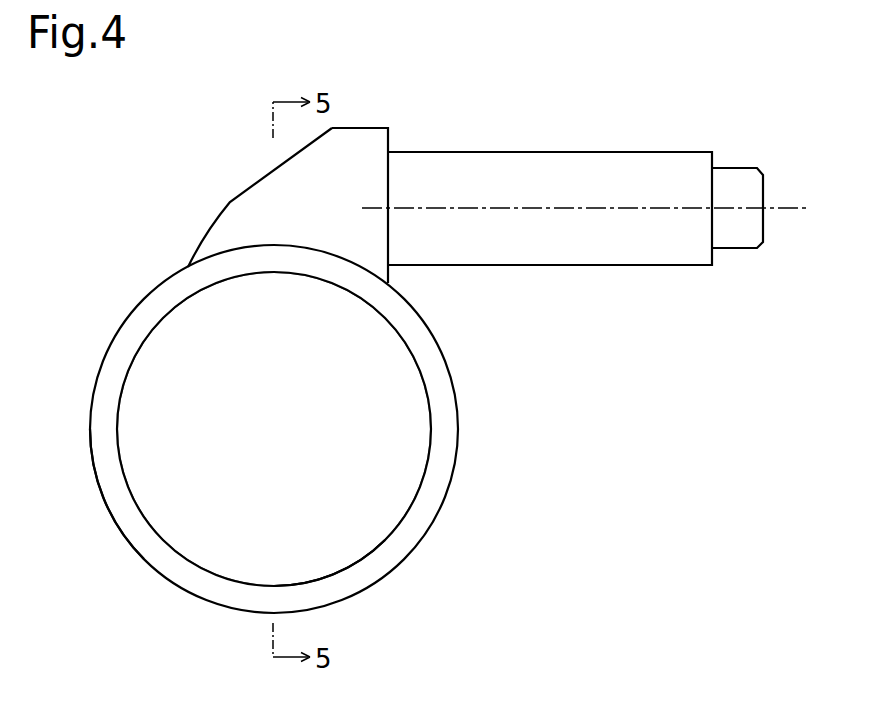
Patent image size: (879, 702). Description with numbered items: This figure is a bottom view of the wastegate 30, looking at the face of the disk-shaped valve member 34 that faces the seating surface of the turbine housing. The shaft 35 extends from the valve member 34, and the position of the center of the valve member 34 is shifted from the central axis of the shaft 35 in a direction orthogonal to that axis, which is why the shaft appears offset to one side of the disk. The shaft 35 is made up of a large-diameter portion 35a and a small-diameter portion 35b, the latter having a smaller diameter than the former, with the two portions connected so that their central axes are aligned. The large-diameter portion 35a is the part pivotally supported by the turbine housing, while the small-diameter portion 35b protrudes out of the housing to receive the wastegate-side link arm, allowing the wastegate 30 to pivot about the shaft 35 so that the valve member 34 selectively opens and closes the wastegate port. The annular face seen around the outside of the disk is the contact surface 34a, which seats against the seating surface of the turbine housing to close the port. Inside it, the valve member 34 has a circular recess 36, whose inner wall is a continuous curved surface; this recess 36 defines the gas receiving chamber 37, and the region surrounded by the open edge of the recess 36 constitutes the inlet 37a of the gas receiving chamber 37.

The wastegate 30 is at (519, 437).
The valve member 34 is at (125, 322).
The contact surface 34a is at (118, 505).
The shaft 35 is at (577, 158).
The large-diameter portion 35a is at (582, 258).
The small-diameter portion 35b is at (740, 240).
The recess 36 is at (400, 493).
The gas receiving chamber 37 is at (290, 442).
The inlet 37a is at (330, 562).